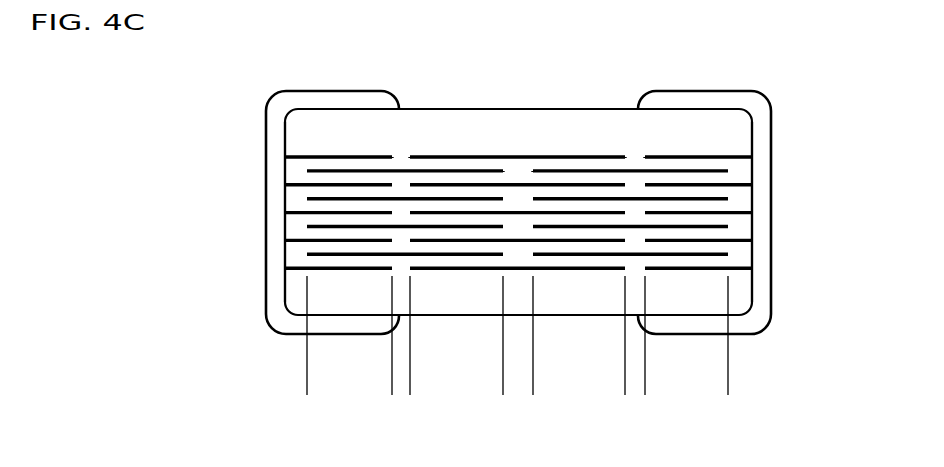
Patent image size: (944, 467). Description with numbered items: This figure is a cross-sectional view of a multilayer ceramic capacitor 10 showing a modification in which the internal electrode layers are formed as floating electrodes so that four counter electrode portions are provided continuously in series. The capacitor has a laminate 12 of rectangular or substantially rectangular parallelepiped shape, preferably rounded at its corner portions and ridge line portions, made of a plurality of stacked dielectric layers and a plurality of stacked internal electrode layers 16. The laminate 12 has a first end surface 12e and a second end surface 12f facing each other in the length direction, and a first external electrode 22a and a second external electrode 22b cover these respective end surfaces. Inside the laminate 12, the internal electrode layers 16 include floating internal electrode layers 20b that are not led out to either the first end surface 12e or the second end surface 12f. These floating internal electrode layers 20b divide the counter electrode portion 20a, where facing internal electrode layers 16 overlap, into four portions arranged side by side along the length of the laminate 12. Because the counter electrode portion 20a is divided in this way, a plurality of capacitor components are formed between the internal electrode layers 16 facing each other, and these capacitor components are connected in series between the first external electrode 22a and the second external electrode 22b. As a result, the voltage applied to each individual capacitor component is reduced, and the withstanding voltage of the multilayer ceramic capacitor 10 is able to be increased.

The multilayer ceramic capacitor 10 is at (279, 73).
The laminate 12 is at (483, 105).
The first end surface 12e is at (285, 228).
The second end surface 12f is at (752, 252).
The internal electrode layer 16 is at (687, 148).
The counter electrode portion 20a is at (728, 388).
The floating internal electrode layer 20b is at (453, 253).
The first external electrode 22a is at (266, 198).
The second external electrode 22b is at (771, 203).